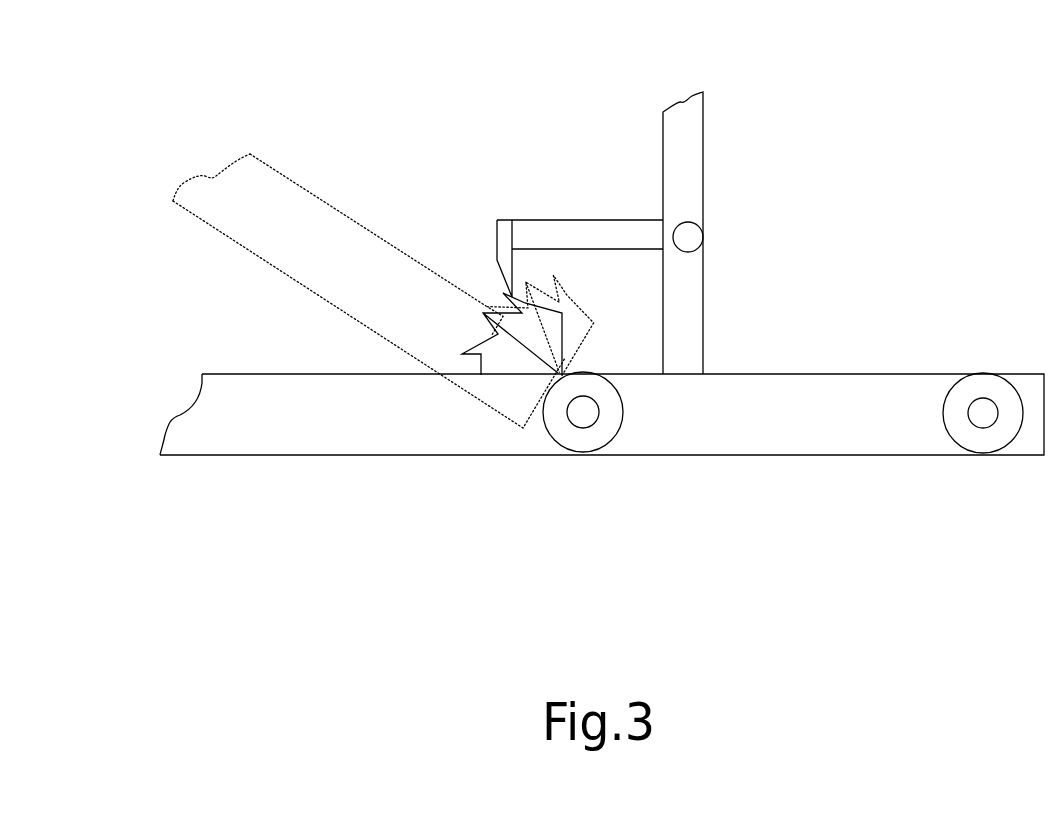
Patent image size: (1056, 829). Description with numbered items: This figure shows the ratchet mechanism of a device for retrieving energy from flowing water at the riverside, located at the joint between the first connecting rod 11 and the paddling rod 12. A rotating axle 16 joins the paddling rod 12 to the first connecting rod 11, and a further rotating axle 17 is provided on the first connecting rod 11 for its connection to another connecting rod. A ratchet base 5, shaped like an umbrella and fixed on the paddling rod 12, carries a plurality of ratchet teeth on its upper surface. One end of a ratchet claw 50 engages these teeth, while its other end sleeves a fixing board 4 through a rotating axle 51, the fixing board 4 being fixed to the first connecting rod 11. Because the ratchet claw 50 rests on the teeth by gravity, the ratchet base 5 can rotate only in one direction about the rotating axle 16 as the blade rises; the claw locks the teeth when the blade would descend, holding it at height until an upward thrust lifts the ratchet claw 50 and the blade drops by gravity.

The fixing board 4 is at (703, 93).
The ratchet base 5 is at (563, 333).
The first connecting rod 11 is at (785, 455).
The paddling rod 12 is at (448, 455).
The rotating axle 16 is at (582, 455).
The rotating axle 17 is at (985, 455).
The ratchet claw 50 is at (503, 255).
The rotating axle 51 is at (703, 237).